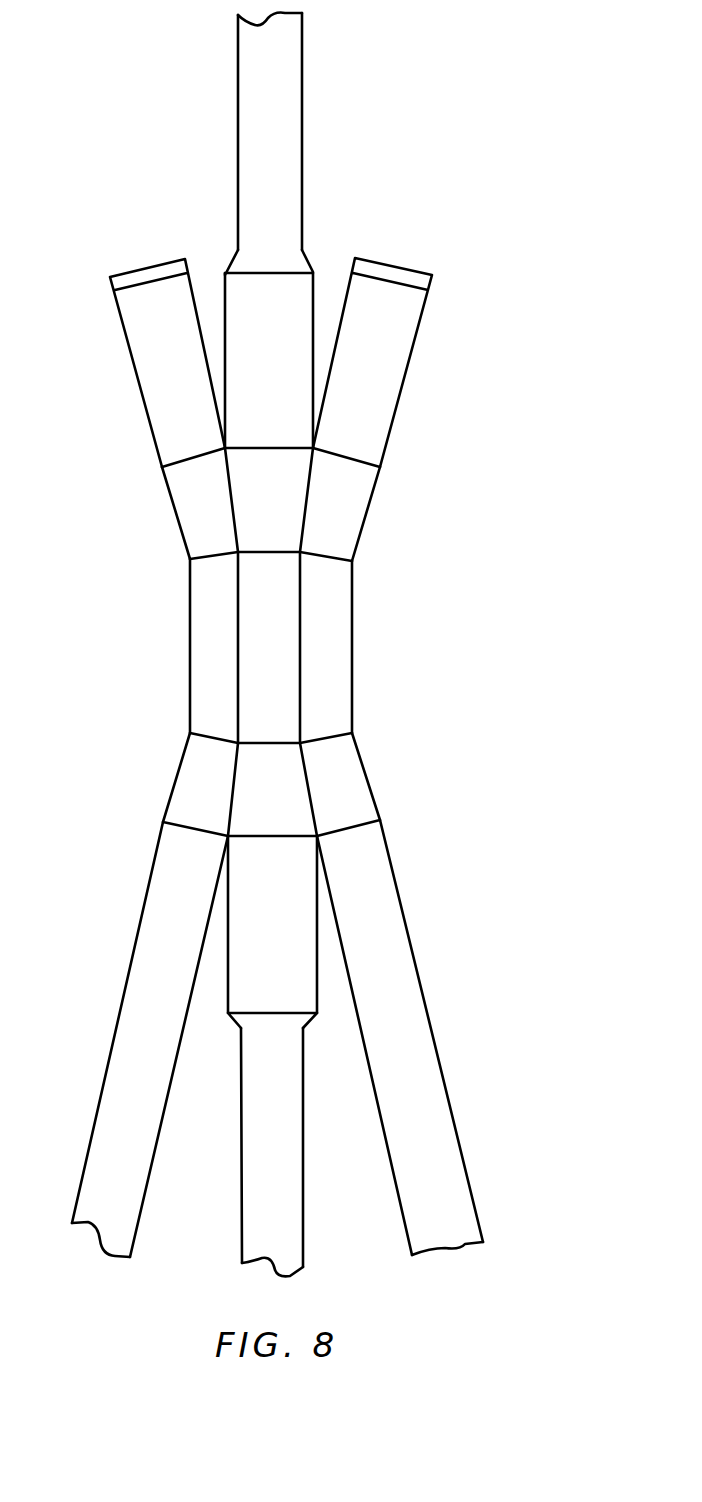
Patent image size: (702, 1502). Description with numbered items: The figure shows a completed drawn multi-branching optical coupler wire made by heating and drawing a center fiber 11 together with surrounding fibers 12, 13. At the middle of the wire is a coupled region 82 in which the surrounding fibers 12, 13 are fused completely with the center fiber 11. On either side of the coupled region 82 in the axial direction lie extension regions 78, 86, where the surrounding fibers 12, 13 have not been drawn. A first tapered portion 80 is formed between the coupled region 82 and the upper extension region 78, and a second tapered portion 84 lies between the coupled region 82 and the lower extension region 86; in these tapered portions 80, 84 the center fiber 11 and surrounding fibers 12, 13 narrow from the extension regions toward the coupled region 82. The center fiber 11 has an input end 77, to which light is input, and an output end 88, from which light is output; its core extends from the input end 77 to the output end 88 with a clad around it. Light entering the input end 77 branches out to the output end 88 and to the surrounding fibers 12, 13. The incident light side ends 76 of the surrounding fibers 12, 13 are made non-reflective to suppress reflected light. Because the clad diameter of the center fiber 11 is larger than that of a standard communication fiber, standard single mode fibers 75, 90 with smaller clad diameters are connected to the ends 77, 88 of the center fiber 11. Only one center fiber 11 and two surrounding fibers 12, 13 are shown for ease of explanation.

The standard single mode fiber 75 is at (292, 147).
The input end 77 is at (307, 262).
The incident light side ends 76 is at (408, 262).
The extension region 78 is at (493, 258).
The first tapered portion 80 is at (495, 453).
The coupled region 82 is at (495, 559).
The second tapered portion 84 is at (497, 738).
The extension region 86 is at (498, 841).
The center fiber 11 is at (280, 657).
The surrounding fiber 12 is at (335, 611).
The surrounding fiber 13 is at (213, 688).
The output end 88 is at (302, 1018).
The standard single mode fiber 90 is at (298, 1172).